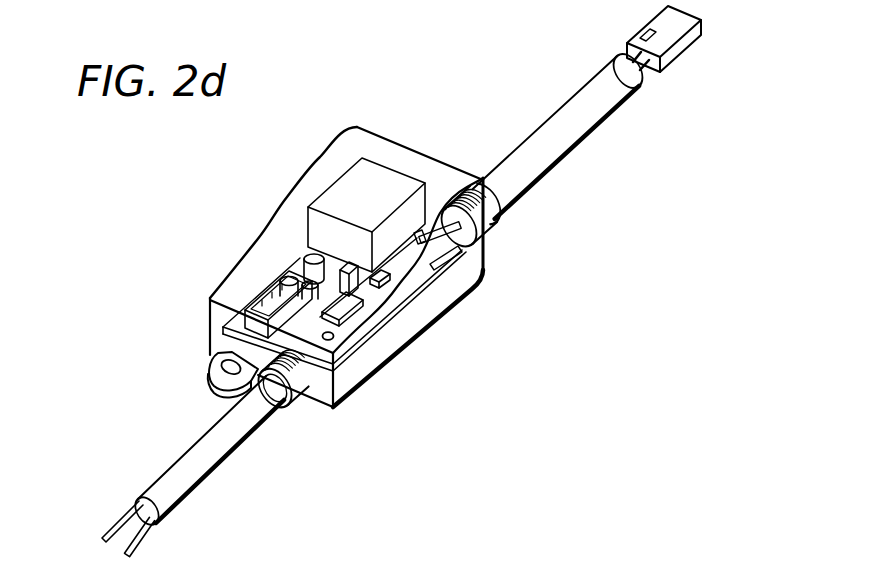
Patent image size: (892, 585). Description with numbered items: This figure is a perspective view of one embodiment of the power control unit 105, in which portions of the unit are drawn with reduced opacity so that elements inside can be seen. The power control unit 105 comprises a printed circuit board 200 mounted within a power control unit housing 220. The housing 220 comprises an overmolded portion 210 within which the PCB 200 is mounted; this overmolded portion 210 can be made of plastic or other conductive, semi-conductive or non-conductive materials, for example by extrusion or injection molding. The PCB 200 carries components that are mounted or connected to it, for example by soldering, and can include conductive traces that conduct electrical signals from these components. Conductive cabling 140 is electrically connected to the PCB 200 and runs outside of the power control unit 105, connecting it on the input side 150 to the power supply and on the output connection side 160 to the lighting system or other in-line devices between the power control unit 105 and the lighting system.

The power control unit 105 is at (207, 203).
The conductive cabling 140 is at (573, 120).
The input side 150 is at (433, 160).
The output connection side 160 is at (340, 330).
The printed circuit board 200 is at (445, 272).
The overmolded portion 210 is at (427, 330).
The power control unit housing 220 is at (373, 138).